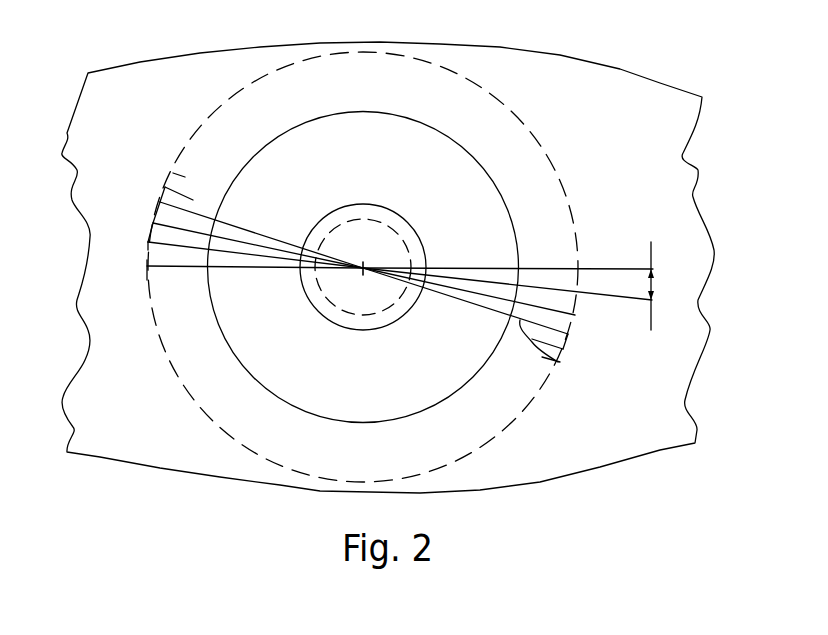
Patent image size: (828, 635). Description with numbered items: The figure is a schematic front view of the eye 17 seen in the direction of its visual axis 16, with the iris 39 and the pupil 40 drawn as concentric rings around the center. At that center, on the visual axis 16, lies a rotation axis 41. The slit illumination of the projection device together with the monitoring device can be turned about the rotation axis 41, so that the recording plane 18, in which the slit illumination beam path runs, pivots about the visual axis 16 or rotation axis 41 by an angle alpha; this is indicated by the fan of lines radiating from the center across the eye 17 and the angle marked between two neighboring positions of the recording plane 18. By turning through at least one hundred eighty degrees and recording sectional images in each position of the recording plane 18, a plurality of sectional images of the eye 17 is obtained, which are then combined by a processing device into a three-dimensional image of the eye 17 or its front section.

The visual axis 16 is at (372, 257).
The eye 17 is at (633, 85).
The recording plane 18 is at (547, 267).
The iris 39 is at (431, 148).
The pupil 40 is at (357, 212).
The rotation axis 41 is at (356, 281).